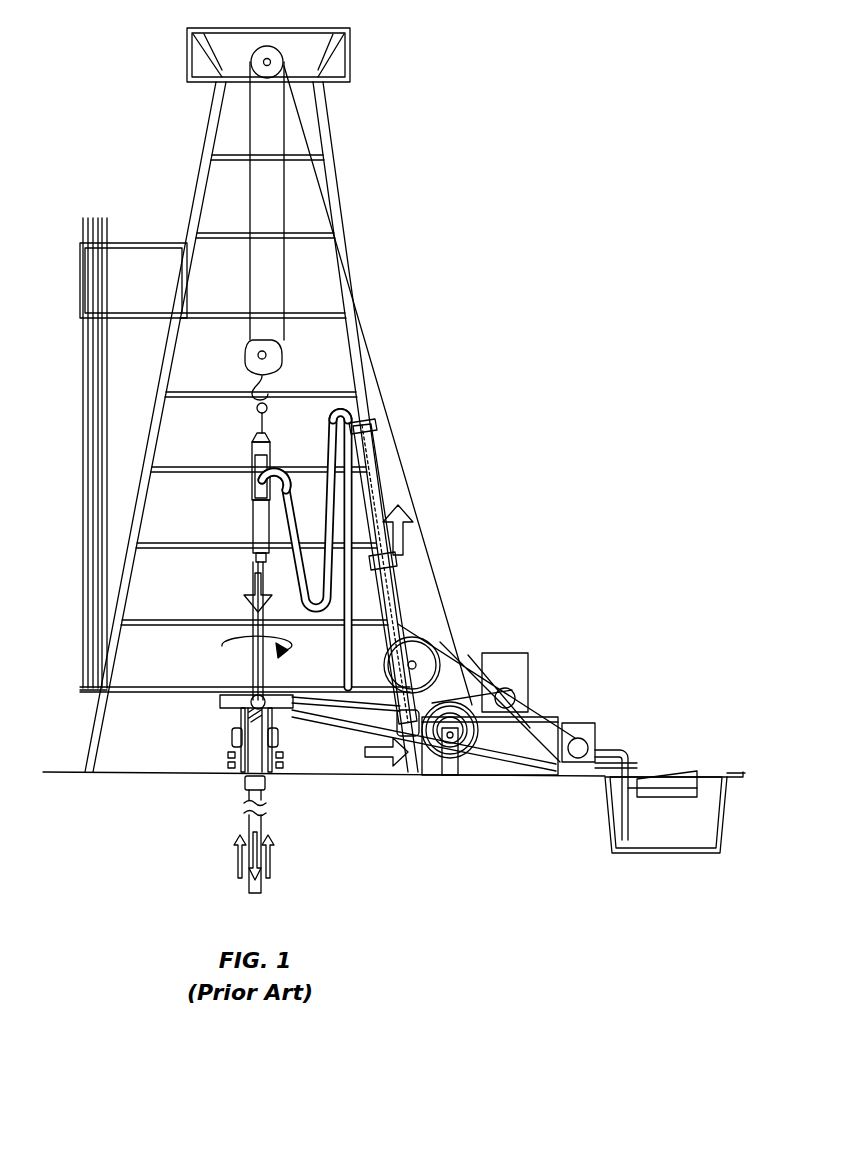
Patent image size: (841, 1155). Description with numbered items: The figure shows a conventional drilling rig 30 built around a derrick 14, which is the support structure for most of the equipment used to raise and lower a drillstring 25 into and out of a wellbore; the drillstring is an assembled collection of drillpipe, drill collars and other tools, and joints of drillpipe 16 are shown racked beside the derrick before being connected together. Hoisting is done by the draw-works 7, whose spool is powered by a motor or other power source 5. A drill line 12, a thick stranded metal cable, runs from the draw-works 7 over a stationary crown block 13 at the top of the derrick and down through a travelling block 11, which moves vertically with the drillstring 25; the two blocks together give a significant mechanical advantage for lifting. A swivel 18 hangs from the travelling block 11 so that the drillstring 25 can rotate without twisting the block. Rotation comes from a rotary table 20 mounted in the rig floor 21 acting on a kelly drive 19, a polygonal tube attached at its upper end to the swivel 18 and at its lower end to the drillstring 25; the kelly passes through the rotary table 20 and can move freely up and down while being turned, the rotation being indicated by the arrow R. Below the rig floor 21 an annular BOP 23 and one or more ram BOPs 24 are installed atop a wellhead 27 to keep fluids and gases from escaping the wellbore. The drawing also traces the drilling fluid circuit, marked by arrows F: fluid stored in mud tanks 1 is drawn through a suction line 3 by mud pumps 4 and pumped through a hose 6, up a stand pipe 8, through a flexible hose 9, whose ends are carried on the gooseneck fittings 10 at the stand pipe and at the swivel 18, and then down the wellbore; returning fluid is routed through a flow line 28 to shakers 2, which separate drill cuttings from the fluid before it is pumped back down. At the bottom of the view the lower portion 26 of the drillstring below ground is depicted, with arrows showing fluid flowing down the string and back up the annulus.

The mud tanks 1 is at (702, 800).
The shakers 2 is at (683, 770).
The suction line 3 is at (621, 752).
The mud pumps 4 is at (584, 723).
The motor or other power source 5 is at (512, 655).
The hose 6 is at (528, 745).
The draw-works 7 is at (452, 716).
The stand pipe 8 is at (391, 598).
The flexible hose 9 is at (327, 520).
The gooseneck 10 is at (343, 413).
The travelling block 11 is at (245, 356).
The drill line 12 is at (286, 193).
The crown block 13 is at (266, 46).
The derrick 14 is at (198, 172).
The drillpipe 16 is at (86, 395).
The swivel 18 is at (252, 525).
The kelly drive 19 is at (252, 615).
The rotary table 20 is at (237, 693).
The rig floor 21 is at (310, 689).
The annular BOP 23 is at (232, 737).
The ram BOPs 24 is at (228, 756).
The drillstring 25 is at (246, 800).
The drill string / bit 26 is at (250, 888).
The wellhead 27 is at (268, 783).
The flow line 28 is at (340, 740).
The drilling rig 30 is at (452, 94).